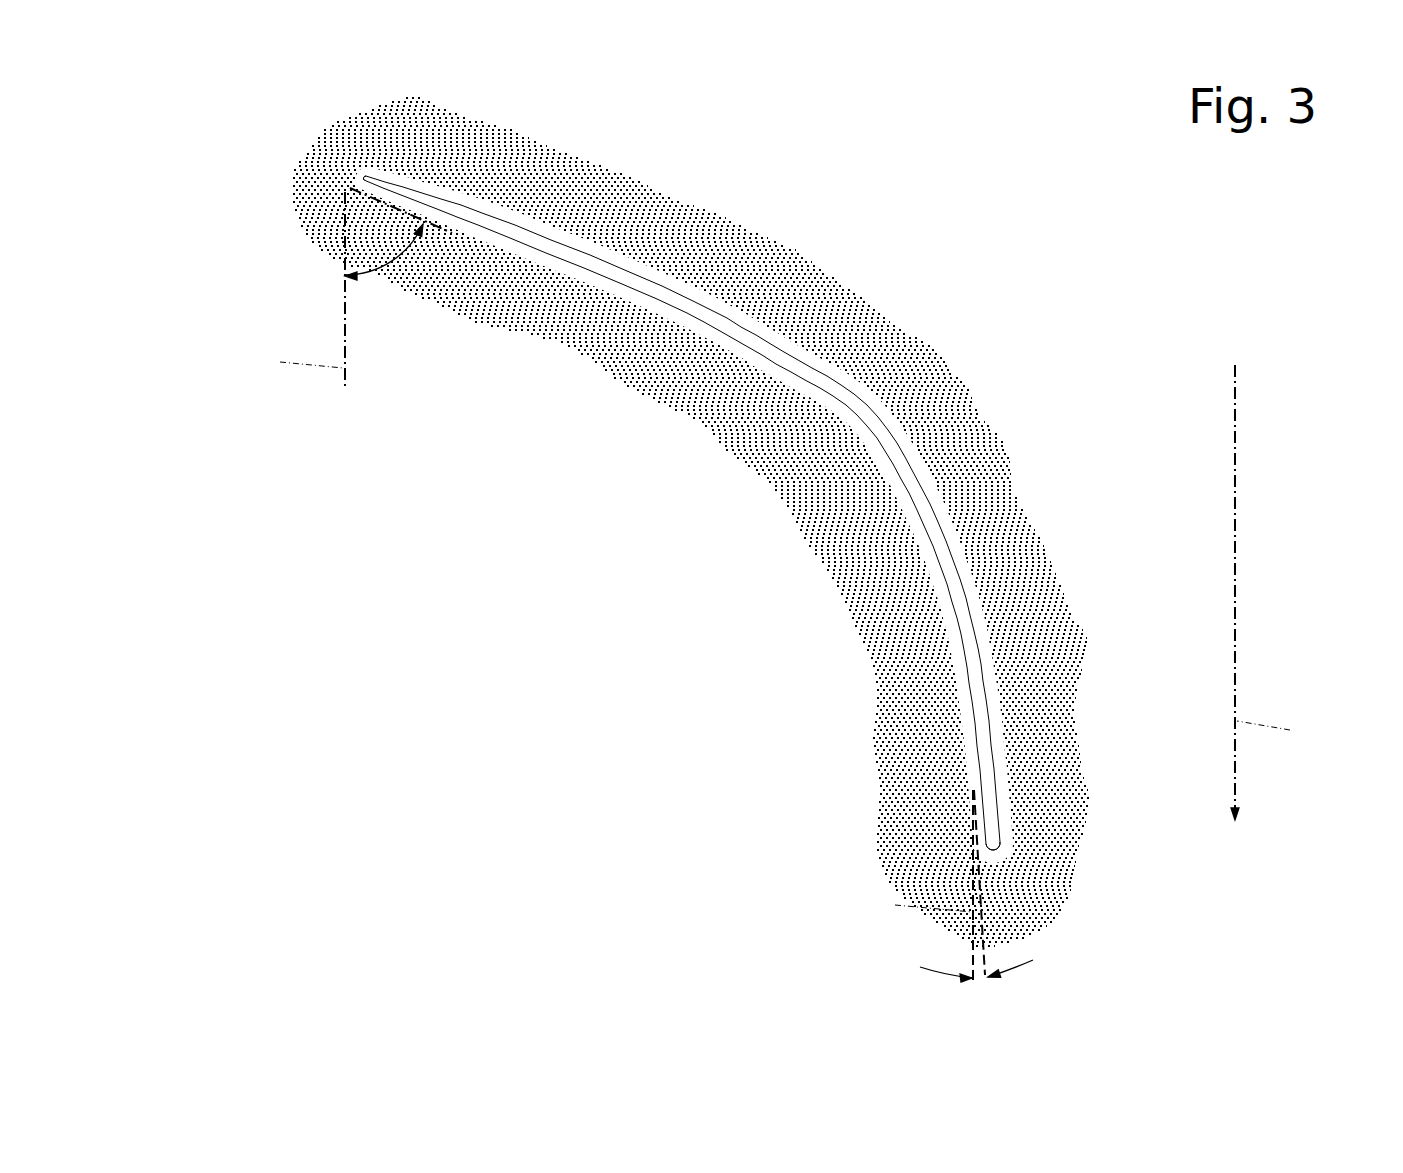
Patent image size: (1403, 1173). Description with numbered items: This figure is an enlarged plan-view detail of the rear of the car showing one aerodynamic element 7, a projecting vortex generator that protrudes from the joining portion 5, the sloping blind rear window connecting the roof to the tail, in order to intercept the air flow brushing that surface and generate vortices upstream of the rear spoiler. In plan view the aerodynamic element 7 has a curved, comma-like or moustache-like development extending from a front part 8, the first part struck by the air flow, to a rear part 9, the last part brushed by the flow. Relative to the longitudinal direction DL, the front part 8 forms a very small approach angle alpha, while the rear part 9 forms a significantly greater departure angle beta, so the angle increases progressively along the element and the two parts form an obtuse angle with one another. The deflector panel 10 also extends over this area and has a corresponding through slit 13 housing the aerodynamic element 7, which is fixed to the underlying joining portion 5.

The joining portion 5 is at (691, 522).
The aerodynamic element 7 is at (785, 527).
The front part 8 is at (996, 843).
The rear part 9 is at (378, 177).
The deflector panel 10 is at (665, 363).
The through slit 13 is at (760, 464).